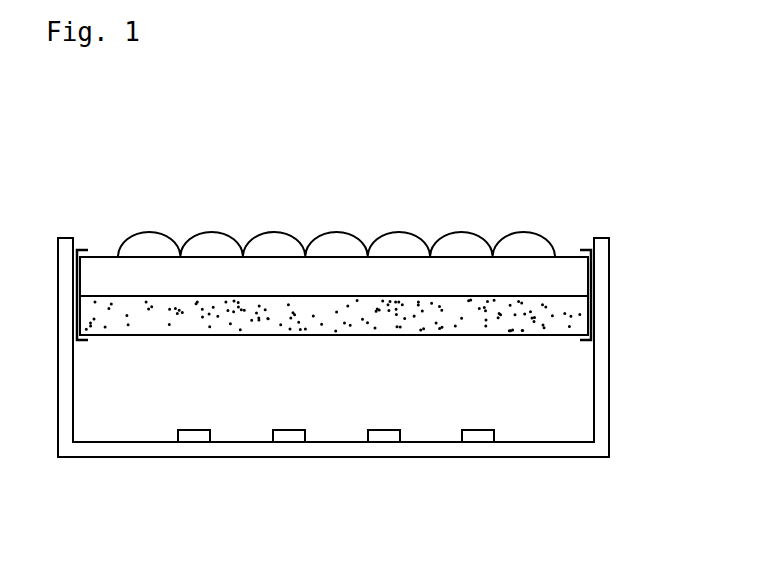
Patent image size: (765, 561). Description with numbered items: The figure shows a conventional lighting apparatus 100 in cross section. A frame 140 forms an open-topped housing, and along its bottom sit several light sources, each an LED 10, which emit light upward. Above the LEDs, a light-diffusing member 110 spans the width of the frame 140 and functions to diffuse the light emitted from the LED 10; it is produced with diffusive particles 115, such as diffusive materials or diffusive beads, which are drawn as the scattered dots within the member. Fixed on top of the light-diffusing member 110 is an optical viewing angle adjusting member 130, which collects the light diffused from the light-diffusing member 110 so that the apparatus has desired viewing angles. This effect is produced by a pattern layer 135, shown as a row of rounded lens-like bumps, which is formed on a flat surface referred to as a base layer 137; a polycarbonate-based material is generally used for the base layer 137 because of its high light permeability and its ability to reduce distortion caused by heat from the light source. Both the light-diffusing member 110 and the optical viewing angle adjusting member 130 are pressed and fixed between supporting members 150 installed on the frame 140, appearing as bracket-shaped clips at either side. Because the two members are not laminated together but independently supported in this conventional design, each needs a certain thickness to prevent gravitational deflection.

The conventional lighting apparatus 100 is at (468, 178).
The LED 10 is at (483, 436).
The light-diffusing member 110 is at (585, 293).
The diffusive particles 115 is at (578, 313).
The optical viewing angle adjusting member 130 is at (416, 228).
The pattern layer 135 is at (524, 249).
The base layer 137 is at (537, 281).
The frame 140 is at (603, 411).
The supporting members 150 is at (78, 335).